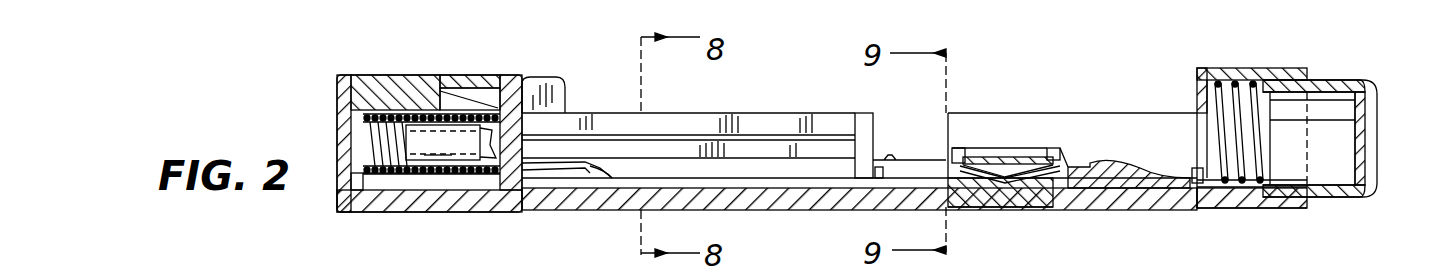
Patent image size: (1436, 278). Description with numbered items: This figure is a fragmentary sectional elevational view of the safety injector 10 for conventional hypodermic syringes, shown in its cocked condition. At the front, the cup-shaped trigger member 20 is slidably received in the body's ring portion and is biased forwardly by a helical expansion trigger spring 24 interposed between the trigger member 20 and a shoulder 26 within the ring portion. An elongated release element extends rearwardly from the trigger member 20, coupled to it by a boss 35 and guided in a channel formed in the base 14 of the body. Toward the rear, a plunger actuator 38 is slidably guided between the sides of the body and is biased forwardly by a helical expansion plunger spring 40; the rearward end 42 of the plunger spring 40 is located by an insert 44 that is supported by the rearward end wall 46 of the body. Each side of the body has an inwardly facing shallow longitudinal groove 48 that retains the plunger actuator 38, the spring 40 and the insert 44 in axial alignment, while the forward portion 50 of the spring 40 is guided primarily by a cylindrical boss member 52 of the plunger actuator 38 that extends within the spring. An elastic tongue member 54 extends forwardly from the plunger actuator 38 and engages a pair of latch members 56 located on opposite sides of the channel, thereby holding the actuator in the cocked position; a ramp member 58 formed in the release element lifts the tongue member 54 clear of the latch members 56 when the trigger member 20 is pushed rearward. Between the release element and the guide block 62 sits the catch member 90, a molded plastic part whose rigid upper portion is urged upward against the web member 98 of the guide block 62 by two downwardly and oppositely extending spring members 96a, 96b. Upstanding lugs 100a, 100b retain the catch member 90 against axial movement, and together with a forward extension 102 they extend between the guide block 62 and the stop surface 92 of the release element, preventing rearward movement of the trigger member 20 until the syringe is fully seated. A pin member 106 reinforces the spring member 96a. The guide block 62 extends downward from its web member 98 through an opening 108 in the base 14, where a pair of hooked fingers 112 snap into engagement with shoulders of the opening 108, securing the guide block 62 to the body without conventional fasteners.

The injector 10 is at (337, 222).
The base 14 is at (595, 190).
The trigger member 20 is at (1363, 50).
The trigger spring 24 is at (1227, 68).
The shoulder 26 is at (1212, 100).
The boss 35 is at (1287, 177).
The plunger actuator 38 is at (557, 50).
The plunger spring 40 is at (400, 188).
The rearward end 42 is at (362, 212).
The insert 44 is at (395, 76).
The rearward end wall 46 is at (337, 88).
The longitudinal groove 48 is at (792, 133).
The forward portion 50 is at (497, 178).
The cylindrical boss member 52 is at (451, 142).
The tongue member 54 is at (540, 188).
The latch members 56 is at (600, 163).
The ramp member 58 is at (607, 177).
The guide block 62 is at (1060, 125).
The catch member 90 is at (997, 180).
The stop surface 92 is at (1080, 160).
The spring member 96a is at (1020, 183).
The spring member 96b is at (983, 180).
The web member 98 is at (1033, 157).
The lug 100a is at (1070, 168).
The lug 100b is at (957, 147).
The forward extension 102 is at (1057, 160).
The pin member 106 is at (1020, 157).
The opening 108 is at (1047, 205).
The hooked fingers 112 is at (1033, 203).